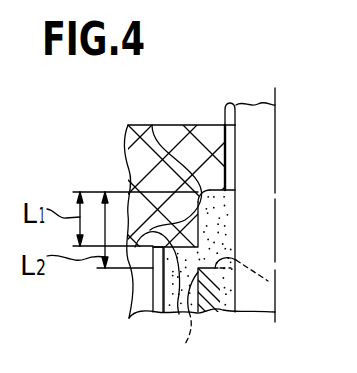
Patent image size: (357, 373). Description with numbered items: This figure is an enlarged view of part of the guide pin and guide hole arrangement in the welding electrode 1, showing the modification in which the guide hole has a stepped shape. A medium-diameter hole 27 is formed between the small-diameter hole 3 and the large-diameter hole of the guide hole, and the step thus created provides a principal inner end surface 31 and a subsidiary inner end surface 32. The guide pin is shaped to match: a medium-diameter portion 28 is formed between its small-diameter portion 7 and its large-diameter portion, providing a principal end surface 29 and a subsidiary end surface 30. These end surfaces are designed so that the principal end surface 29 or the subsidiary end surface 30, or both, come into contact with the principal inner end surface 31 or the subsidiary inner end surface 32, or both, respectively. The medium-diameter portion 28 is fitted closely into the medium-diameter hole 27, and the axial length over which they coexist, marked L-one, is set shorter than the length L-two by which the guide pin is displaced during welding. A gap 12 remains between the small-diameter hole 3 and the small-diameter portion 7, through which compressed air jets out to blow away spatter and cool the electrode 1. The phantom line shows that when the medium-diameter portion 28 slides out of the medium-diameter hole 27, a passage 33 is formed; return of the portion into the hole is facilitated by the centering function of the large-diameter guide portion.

The electrode 1 is at (114, 116).
The small-diameter hole 3 is at (236, 108).
The small-diameter portion 7 is at (228, 117).
The gap 12 is at (236, 158).
The medium-diameter hole 27 is at (152, 125).
The medium-diameter portion 28 is at (130, 174).
The principal end surface 29 is at (147, 268).
The subsidiary end surface 30 is at (222, 175).
The principal inner end surface 31 is at (180, 314).
The subsidiary inner end surface 32 is at (211, 194).
The passage 33 is at (203, 246).